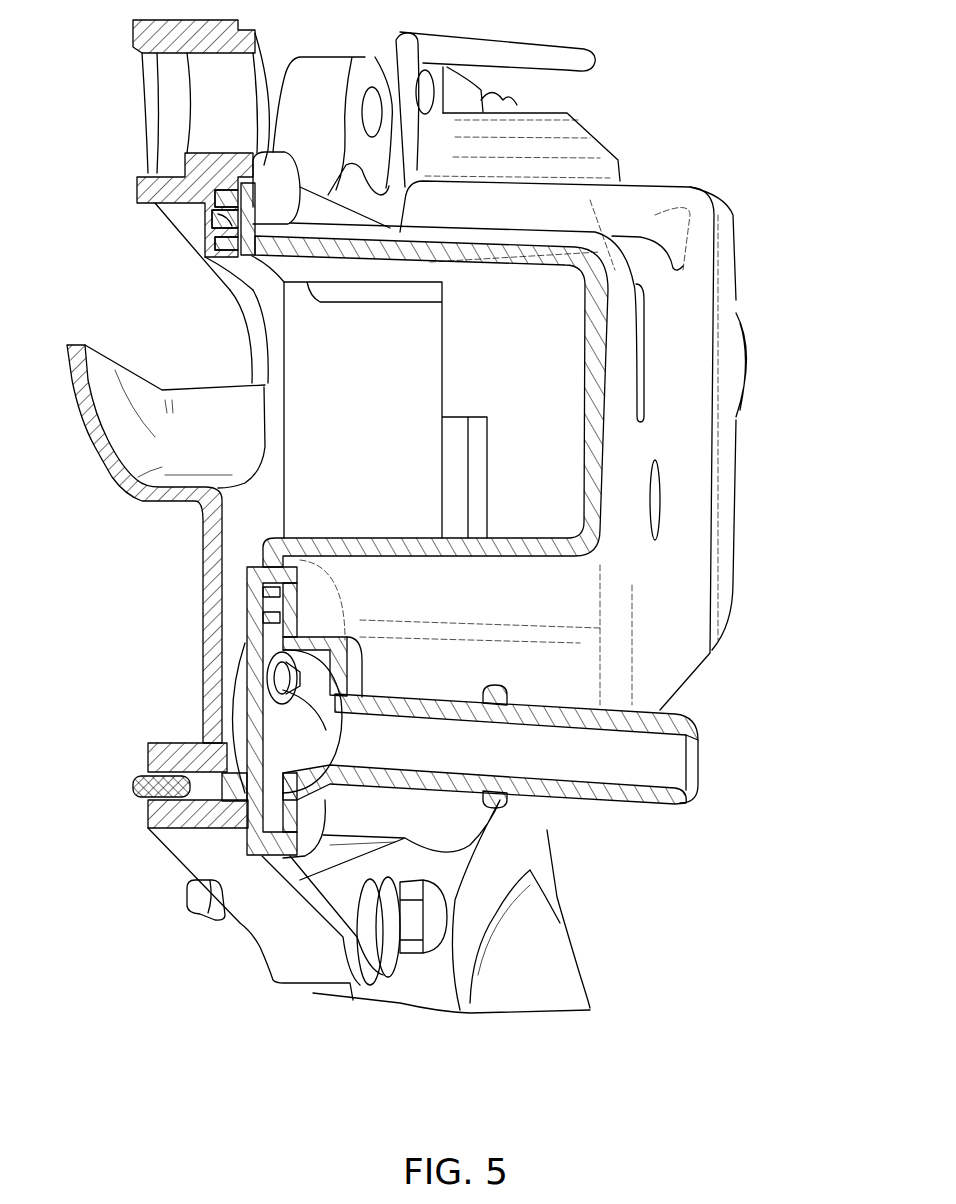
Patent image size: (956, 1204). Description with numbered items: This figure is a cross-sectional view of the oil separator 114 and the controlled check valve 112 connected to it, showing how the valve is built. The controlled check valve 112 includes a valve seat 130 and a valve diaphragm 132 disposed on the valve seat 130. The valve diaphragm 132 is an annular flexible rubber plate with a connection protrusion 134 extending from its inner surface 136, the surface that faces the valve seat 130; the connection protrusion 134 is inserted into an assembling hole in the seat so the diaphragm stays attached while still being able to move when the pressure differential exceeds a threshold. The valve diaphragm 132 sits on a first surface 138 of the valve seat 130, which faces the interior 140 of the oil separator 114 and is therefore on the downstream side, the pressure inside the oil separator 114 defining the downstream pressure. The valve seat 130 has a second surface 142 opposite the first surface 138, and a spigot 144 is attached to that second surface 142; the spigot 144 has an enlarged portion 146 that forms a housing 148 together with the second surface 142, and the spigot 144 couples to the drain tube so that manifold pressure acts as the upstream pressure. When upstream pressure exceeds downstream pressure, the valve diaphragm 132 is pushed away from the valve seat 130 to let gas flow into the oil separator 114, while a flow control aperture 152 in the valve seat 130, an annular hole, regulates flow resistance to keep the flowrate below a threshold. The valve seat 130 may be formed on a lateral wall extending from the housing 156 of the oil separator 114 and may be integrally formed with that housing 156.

The controlled check valve 112 is at (228, 670).
The oil separator 114 is at (727, 598).
The valve seat 130 is at (270, 730).
The valve diaphragm 132 is at (240, 660).
The connection protrusion 134 is at (280, 686).
The inner surface 136 is at (245, 704).
The first surface 138 is at (243, 620).
The interior 140 is at (297, 452).
The second surface 142 is at (135, 792).
The spigot 144 is at (619, 802).
The enlarged portion 146 is at (360, 648).
The housing 148 is at (320, 766).
The flow control aperture 152 is at (290, 723).
The housing 156 is at (596, 434).